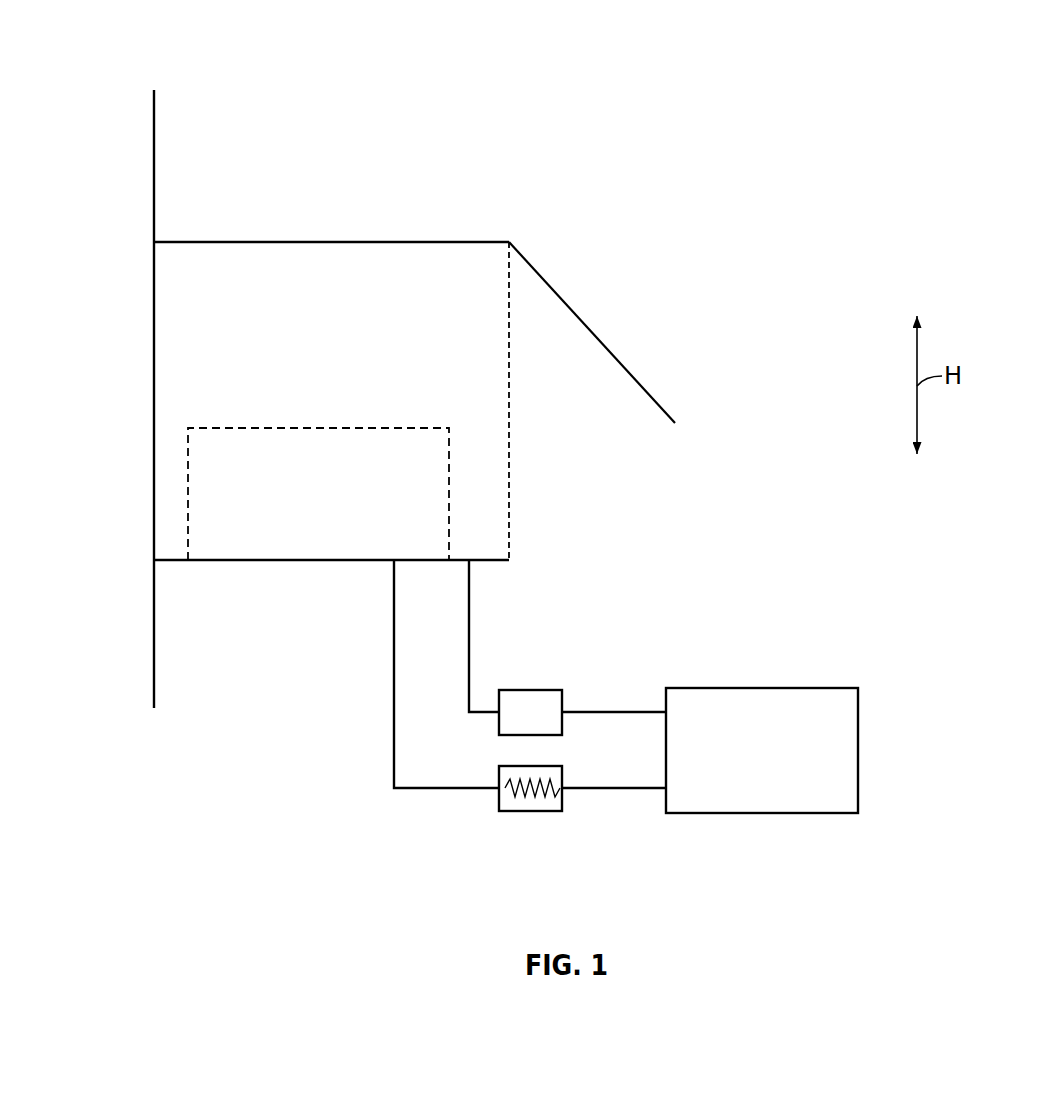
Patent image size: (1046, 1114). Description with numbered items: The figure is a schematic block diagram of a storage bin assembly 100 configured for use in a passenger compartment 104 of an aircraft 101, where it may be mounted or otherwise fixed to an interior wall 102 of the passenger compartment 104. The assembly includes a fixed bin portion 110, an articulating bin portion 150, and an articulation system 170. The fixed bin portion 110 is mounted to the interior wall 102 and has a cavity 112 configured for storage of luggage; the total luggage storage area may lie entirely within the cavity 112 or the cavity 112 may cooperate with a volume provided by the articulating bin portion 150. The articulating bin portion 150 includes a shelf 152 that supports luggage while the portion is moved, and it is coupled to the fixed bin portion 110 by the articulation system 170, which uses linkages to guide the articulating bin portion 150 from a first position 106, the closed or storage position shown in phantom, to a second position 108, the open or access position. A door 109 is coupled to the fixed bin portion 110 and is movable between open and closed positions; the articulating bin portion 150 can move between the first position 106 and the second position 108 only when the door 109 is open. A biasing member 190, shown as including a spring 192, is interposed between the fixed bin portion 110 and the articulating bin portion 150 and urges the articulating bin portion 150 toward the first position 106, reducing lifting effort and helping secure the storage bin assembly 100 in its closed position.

The storage bin assembly 100 is at (762, 298).
The aircraft 101 is at (128, 118).
The interior wall 102 is at (154, 134).
The passenger compartment 104 is at (256, 80).
The first position 106 is at (250, 412).
The second position 108 is at (793, 677).
The door 109 is at (606, 347).
The fixed bin portion 110 is at (296, 242).
The cavity 112 is at (438, 361).
The articulating bin portion 150 is at (326, 428).
The shelf 152 is at (762, 812).
The articulation system 170 is at (532, 690).
The biasing member 190 is at (530, 812).
The spring 192 is at (543, 786).